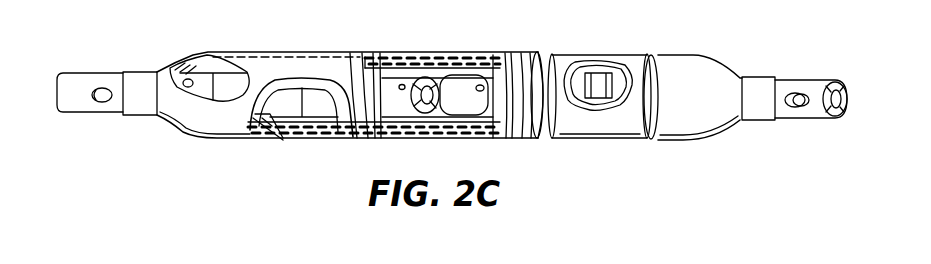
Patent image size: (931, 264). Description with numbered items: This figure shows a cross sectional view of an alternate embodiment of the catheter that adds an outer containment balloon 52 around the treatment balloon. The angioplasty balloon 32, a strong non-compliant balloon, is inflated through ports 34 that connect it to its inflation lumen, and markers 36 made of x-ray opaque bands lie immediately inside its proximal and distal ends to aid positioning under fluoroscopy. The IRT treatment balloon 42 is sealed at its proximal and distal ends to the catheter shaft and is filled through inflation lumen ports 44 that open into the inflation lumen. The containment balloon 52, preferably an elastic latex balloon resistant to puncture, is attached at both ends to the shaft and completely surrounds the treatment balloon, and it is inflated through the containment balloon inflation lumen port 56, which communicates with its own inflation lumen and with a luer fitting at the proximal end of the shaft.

The angioplasty balloon 32 is at (385, 86).
The ports 34 is at (403, 84).
The markers 36 is at (599, 86).
The IRT treatment balloon 42 is at (358, 68).
The inflation lumen ports 44 is at (276, 118).
The containment balloon 52 is at (697, 58).
The containment balloon inflation lumen port 56 is at (189, 79).